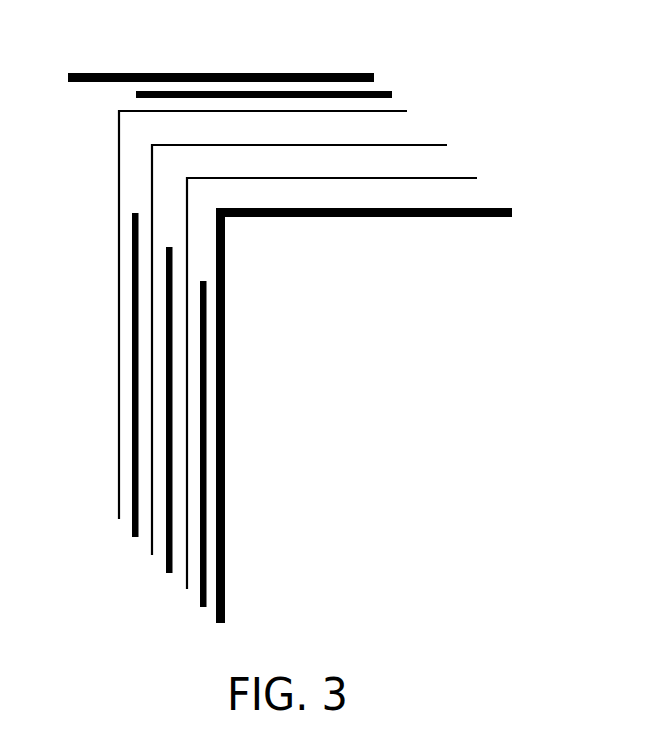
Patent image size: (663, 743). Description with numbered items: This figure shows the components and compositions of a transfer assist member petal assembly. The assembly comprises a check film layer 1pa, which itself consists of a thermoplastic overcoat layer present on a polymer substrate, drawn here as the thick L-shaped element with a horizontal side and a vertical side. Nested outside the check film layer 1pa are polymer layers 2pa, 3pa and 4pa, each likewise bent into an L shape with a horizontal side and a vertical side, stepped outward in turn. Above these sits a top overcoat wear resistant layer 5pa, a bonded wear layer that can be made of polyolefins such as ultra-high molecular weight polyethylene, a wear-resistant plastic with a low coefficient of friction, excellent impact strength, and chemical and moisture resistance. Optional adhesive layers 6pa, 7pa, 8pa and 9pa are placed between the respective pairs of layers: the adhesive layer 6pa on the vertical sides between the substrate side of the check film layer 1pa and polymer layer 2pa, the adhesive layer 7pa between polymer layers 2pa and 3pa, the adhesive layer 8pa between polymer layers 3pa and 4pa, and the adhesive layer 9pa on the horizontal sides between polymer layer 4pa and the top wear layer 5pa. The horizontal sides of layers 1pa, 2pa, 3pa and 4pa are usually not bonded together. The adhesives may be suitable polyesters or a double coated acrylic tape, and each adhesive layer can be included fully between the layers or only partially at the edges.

The check film layer 1pa is at (512, 213).
The polymer layer 2pa is at (477, 178).
The polymer layer 3pa is at (447, 145).
The polymer layer 4pa is at (407, 111).
The top overcoat wear resistant layer 5pa is at (374, 77).
The adhesive layer 6pa is at (202, 500).
The adhesive layer 7pa is at (168, 407).
The adhesive layer 8pa is at (135, 303).
The adhesive layer 9pa is at (136, 94).